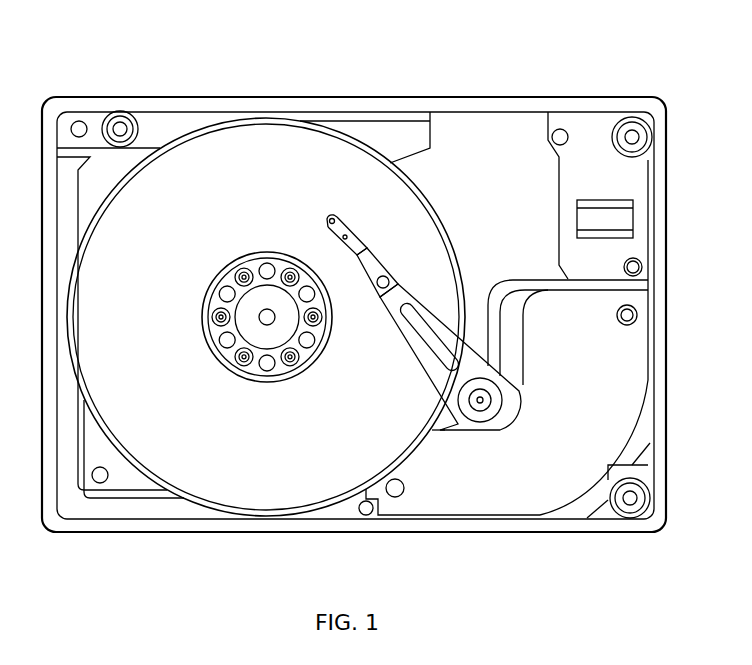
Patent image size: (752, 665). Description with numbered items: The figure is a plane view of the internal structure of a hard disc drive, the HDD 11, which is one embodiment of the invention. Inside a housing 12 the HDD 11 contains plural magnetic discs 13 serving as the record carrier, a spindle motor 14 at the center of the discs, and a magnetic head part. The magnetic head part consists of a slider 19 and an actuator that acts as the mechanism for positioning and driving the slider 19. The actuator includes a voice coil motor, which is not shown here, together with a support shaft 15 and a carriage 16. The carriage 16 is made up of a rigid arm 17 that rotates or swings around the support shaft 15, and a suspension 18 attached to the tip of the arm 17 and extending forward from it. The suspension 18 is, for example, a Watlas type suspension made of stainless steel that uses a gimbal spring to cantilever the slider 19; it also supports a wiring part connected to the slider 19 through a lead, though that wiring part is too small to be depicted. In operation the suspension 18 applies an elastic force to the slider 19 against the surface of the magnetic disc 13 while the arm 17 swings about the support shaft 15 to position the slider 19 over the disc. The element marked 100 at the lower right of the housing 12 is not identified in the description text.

The HDD 11 is at (354, 65).
The housing 12 is at (262, 532).
The magnetic disc 13 is at (440, 232).
The spindle motor 14 is at (245, 325).
The support shaft 15 is at (482, 402).
The carriage 16 is at (405, 315).
The arm 17 is at (407, 340).
The suspension 18 is at (358, 237).
The slider 19 is at (356, 206).
The ramp member 100 is at (573, 509).